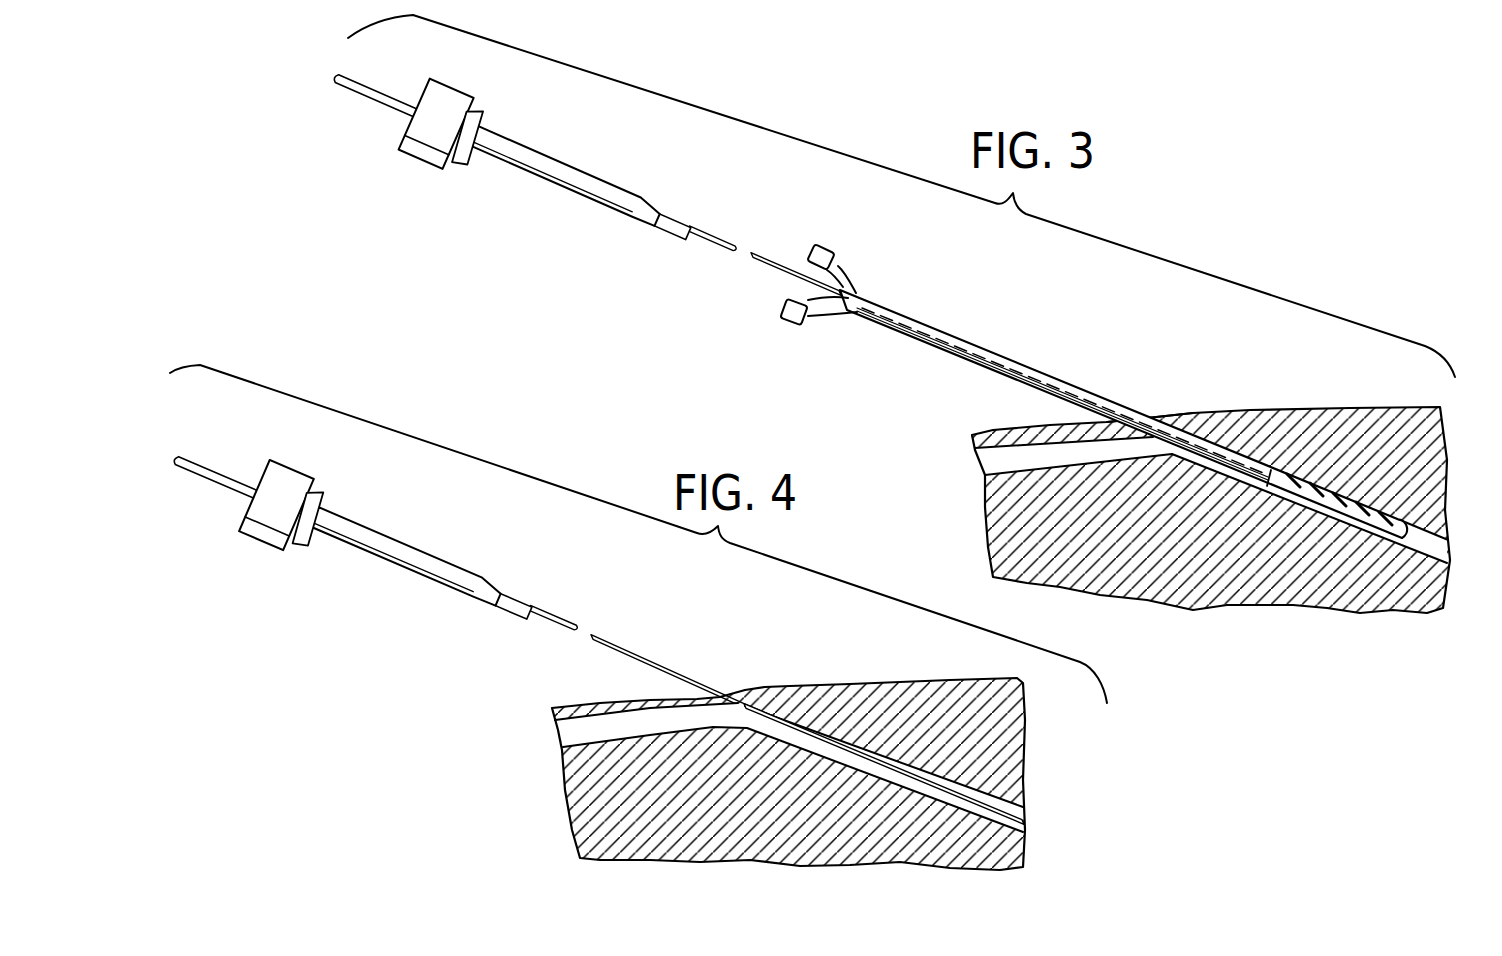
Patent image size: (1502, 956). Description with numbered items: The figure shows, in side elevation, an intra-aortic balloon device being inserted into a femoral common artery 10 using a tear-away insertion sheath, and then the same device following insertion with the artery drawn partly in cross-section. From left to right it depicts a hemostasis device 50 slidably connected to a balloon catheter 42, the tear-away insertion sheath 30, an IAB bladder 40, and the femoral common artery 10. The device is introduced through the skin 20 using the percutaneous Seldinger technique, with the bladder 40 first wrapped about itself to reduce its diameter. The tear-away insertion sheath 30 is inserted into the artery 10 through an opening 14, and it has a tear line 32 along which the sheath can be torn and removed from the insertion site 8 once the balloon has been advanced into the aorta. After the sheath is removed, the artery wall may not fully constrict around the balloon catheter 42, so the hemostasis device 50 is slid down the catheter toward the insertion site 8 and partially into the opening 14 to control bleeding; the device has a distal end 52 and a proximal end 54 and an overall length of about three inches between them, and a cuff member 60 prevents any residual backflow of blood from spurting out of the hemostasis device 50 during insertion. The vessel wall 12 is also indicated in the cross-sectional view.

In FIG. 3, the insertion site 8 is at (993, 460).
In FIG. 4, the insertion site 8 is at (802, 684).
In FIG. 3, the femoral common artery 10 is at (1430, 568).
In FIG. 4, the femoral common artery 10 is at (563, 733).
In FIG. 3, the vessel wall 12 is at (1440, 517).
In FIG. 4, the vessel wall 12 is at (890, 753).
In FIG. 3, the opening 14 is at (1190, 432).
In FIG. 4, the opening 14 is at (812, 720).
In FIG. 3, the skin 20 is at (1262, 407).
In FIG. 3, the tear-away insertion sheath 30 is at (953, 327).
In FIG. 3, the tear line 32 is at (882, 312).
In FIG. 3, the IAB bladder 40 is at (1372, 533).
In FIG. 3, the balloon catheter 42 is at (717, 248).
In FIG. 4, the balloon catheter 42 is at (633, 657).
In FIG. 3, the hemostasis device 50 is at (548, 160).
In FIG. 4, the hemostasis device 50 is at (418, 560).
In FIG. 3, the distal end 52 is at (675, 215).
In FIG. 4, the distal end 52 is at (515, 597).
In FIG. 3, the proximal end 54 is at (485, 130).
In FIG. 4, the proximal end 54 is at (332, 515).
In FIG. 3, the cuff member 60 is at (447, 100).
In FIG. 4, the cuff member 60 is at (280, 482).